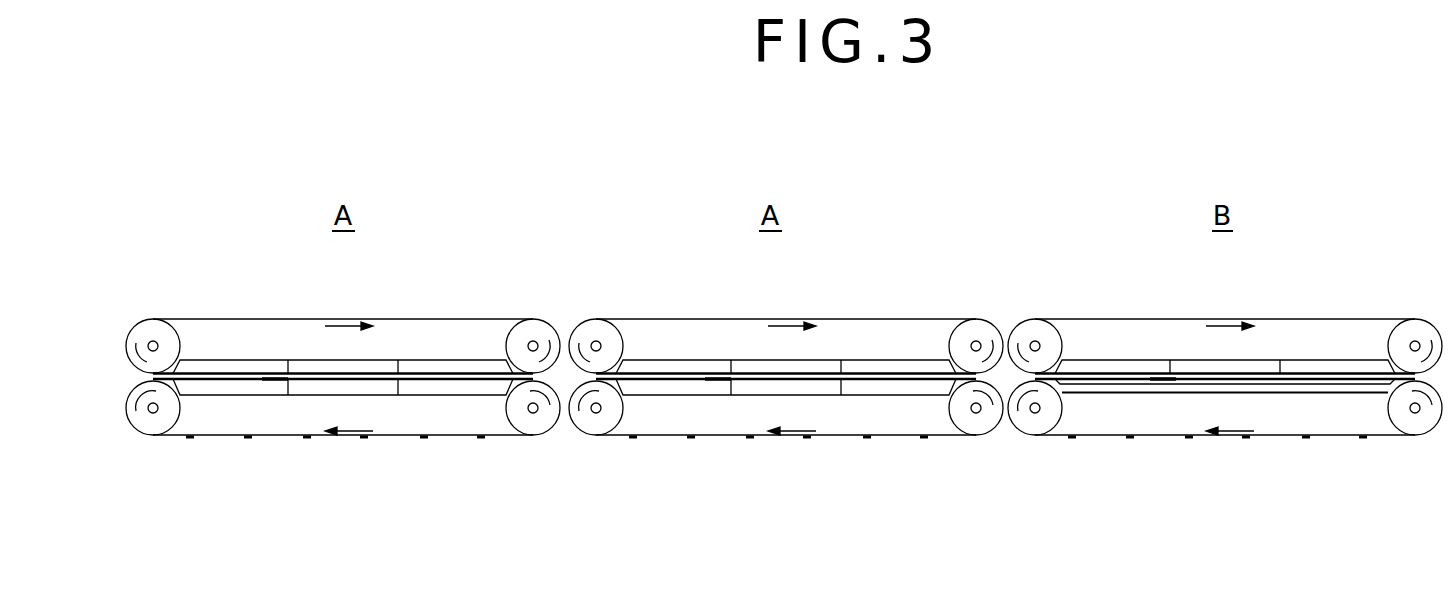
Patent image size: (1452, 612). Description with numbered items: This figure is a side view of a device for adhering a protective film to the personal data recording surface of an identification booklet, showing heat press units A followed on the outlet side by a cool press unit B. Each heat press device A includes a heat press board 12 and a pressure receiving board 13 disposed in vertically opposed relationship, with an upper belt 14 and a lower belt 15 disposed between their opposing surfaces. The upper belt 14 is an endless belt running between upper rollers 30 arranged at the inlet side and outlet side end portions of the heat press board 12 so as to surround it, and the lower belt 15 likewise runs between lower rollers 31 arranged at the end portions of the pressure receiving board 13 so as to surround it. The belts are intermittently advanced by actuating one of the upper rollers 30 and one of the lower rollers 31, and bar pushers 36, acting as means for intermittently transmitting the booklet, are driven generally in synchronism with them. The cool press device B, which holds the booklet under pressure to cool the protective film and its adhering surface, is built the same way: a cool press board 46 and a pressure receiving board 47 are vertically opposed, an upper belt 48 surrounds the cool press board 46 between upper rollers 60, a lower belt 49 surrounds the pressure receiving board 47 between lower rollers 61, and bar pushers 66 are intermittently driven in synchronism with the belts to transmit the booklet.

The heat press board 12 is at (368, 362).
The pressure receiving board 13 is at (372, 392).
The upper belt 14 is at (264, 319).
The lower belt 15 is at (332, 437).
The upper rollers 30 is at (146, 330).
The lower rollers 31 is at (156, 430).
The bar pushers 36 is at (275, 380).
The cool press board 46 is at (1257, 364).
The pressure receiving board 47 is at (1248, 394).
The upper belt 48 is at (1160, 319).
The lower belt 49 is at (1300, 392).
The upper rollers 60 is at (1030, 330).
The lower rollers 61 is at (1038, 430).
The bar pushers 66 is at (1158, 380).